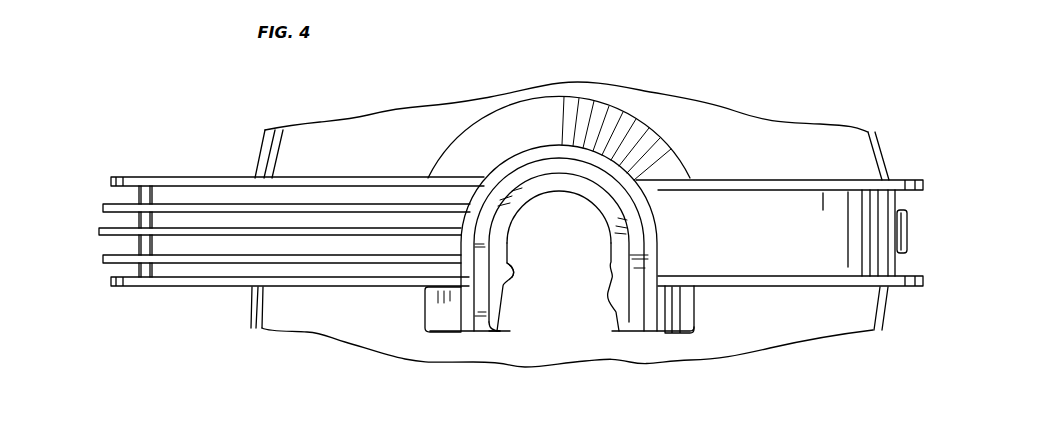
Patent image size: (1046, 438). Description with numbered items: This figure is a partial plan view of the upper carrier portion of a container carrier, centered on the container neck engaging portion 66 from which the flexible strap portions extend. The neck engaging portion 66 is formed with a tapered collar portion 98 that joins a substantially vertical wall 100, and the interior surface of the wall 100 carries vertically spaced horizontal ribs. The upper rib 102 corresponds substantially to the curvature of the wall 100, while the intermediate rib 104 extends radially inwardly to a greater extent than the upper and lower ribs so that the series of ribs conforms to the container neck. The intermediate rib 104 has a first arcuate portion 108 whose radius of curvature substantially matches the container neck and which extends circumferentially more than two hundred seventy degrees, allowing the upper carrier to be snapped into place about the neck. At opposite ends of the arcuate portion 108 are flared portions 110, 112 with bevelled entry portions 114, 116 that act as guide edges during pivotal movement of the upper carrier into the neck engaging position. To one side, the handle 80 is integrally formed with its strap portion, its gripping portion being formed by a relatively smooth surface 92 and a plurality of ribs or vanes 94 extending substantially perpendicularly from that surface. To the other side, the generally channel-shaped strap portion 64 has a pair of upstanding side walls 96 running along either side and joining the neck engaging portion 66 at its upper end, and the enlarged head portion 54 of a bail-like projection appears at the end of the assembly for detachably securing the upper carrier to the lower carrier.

The enlarged head portion 54 is at (907, 231).
The strap portion 64 is at (780, 178).
The container neck engaging portion 66 is at (667, 144).
The handle 80 is at (364, 176).
The smooth surface 92 is at (180, 277).
The ribs or vanes 94 is at (103, 209).
The upstanding side walls 96 is at (813, 180).
The tapered collar portion 98 is at (470, 152).
The vertical wall 100 is at (545, 160).
The upper rib 102 is at (481, 331).
The intermediate rib 104 is at (507, 295).
The first arcuate portion 108 is at (577, 193).
The flared portion 110 is at (513, 277).
The flared portion 112 is at (605, 311).
The bevelled entry portion 114 is at (495, 328).
The bevelled entry portion 116 is at (620, 333).